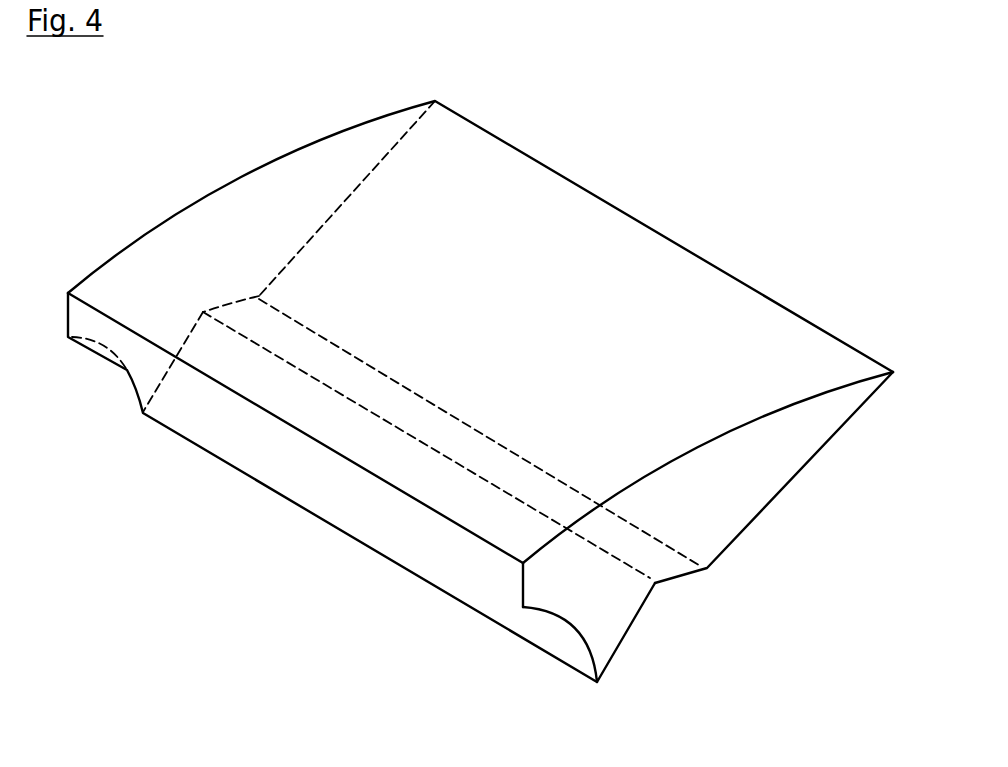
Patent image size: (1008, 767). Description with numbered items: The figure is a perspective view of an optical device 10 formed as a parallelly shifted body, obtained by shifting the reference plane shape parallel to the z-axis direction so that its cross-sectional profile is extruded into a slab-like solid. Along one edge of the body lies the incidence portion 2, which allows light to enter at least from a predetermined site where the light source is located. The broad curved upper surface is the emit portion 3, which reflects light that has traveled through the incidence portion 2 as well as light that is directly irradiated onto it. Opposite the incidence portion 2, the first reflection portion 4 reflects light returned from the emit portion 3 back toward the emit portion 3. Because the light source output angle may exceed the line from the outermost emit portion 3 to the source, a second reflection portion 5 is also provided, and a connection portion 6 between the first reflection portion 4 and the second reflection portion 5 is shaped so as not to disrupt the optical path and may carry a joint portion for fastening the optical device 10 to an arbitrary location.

The optical device 10 is at (80, 88).
The emit portion 3 is at (253, 198).
The incidence portion 2 is at (188, 423).
The first reflection portion 4 is at (787, 483).
The second reflection portion 5 is at (617, 660).
The connection portion 6 is at (680, 581).